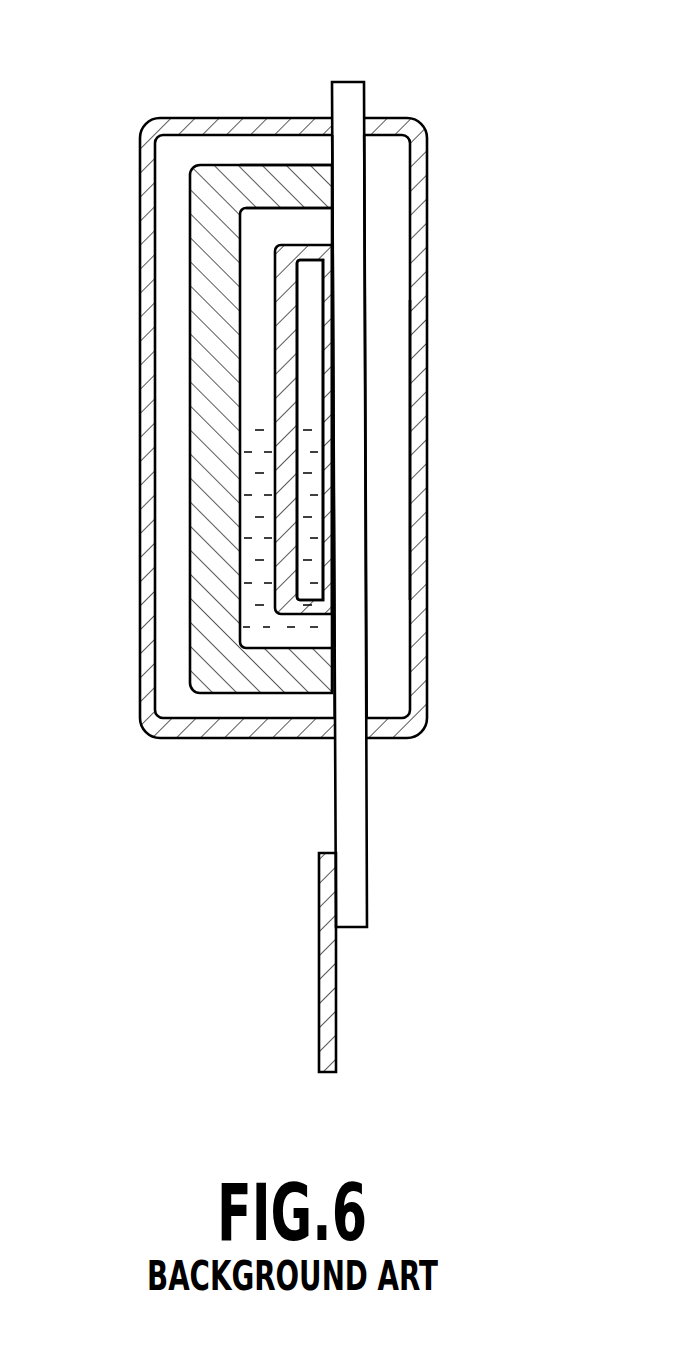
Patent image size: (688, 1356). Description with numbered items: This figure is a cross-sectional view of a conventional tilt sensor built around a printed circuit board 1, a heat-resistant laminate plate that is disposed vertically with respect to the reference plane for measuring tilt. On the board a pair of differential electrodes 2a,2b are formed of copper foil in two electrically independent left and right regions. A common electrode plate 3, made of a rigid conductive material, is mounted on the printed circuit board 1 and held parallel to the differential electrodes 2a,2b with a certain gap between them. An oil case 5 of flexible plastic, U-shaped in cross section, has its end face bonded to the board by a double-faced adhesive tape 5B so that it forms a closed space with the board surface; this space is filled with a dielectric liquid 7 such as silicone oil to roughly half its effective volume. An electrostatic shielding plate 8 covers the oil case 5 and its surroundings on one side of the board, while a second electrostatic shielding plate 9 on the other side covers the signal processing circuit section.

The printed circuit board 1 is at (348, 82).
The differential electrodes 2a,2b is at (335, 309).
The common electrode plate 3 is at (287, 285).
The oil case 5 is at (208, 238).
The double-faced adhesive tape 5B is at (330, 193).
The dielectric liquid 7 is at (318, 543).
The electrostatic shielding plate 8 is at (152, 645).
The electrostatic shielding plate 9 is at (418, 468).